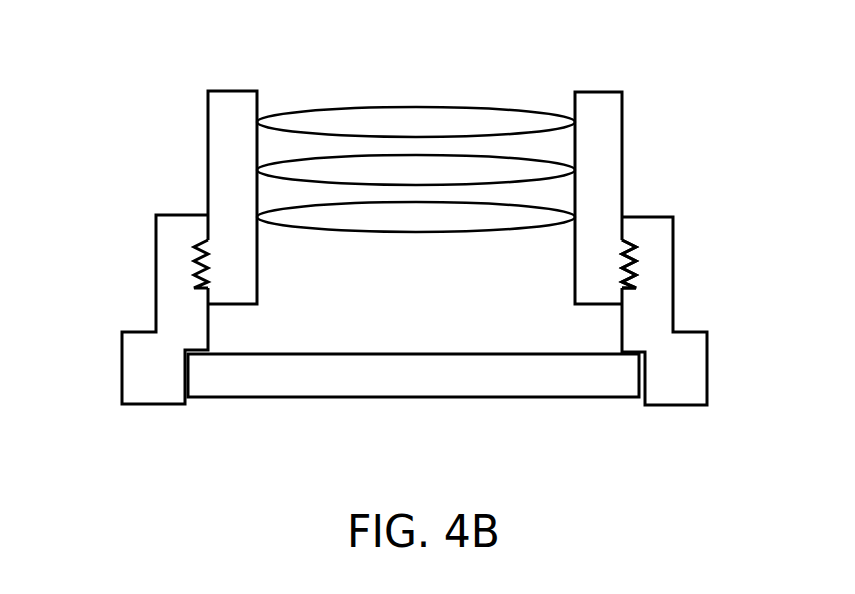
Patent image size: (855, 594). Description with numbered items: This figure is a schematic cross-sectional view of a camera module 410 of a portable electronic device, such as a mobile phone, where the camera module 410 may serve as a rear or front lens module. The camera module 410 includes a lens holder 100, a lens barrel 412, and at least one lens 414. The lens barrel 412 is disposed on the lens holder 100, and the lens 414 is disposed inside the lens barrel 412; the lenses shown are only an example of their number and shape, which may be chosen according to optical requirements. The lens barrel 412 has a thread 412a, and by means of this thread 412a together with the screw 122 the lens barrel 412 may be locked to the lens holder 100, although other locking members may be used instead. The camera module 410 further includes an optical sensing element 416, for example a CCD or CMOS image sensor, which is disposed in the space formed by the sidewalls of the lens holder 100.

The camera module 410 is at (411, 248).
The lens barrel 412 is at (237, 105).
The lens 414 is at (530, 122).
The thread 412a is at (639, 242).
The screw 122 is at (609, 252).
The optical sensing element 416 is at (218, 373).
The lens holder 100 is at (678, 388).